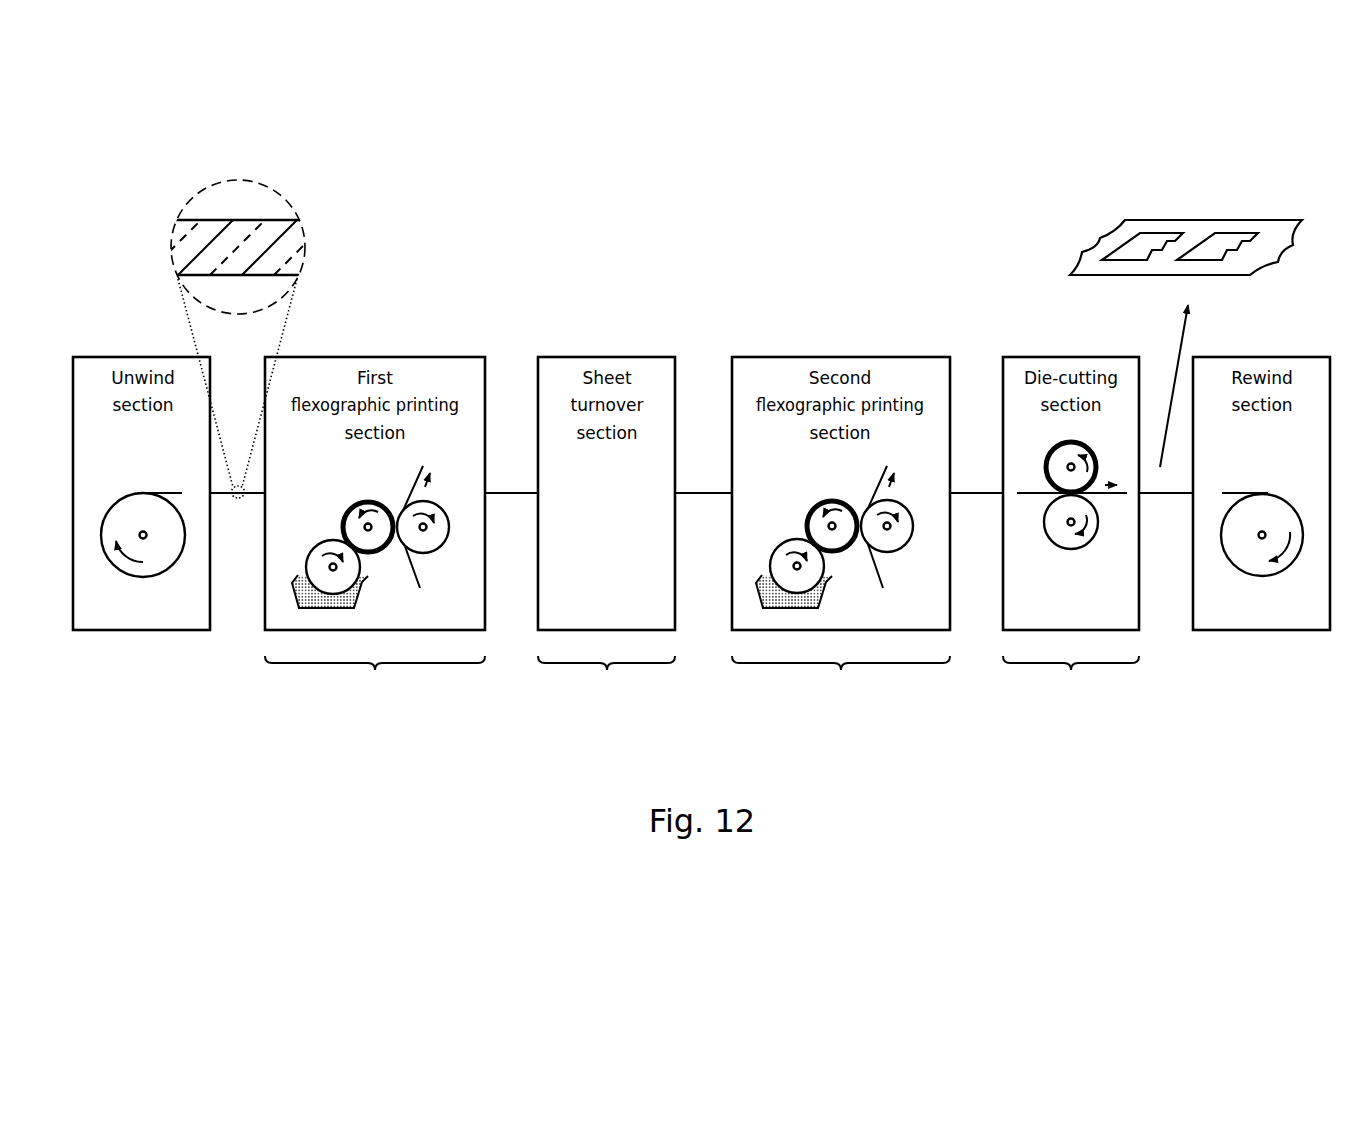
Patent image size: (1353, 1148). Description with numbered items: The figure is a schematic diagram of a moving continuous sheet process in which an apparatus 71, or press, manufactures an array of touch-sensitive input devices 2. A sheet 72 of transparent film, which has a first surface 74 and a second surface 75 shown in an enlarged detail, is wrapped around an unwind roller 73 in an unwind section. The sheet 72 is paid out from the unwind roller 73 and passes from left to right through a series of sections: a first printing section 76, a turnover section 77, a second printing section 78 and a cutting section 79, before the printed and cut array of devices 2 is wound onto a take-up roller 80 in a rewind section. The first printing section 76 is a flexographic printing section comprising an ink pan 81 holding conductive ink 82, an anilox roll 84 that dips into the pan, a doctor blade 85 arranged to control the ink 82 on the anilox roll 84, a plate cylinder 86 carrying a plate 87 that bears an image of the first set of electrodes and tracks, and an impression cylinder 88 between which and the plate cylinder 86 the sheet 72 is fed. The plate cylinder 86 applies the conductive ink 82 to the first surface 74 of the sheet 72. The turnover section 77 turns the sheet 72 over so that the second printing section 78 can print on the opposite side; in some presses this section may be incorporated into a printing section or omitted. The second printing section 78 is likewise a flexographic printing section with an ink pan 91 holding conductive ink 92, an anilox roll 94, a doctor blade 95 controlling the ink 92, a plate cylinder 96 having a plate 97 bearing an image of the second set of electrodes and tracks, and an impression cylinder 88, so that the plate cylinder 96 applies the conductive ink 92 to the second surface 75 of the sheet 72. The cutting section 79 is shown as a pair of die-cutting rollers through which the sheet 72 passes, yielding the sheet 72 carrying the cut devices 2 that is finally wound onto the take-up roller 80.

The touch-sensitive input device 2 is at (1150, 240).
The apparatus 71 is at (1270, 776).
The sheet of transparent film 72 is at (300, 246).
The unwind roller 73 is at (162, 562).
The first surface 74 is at (275, 216).
The second surface 75 is at (287, 280).
The first printing section 76 is at (375, 678).
The turnover section 77 is at (606, 678).
The second printing section 78 is at (841, 678).
The cutting section 79 is at (1071, 678).
The take-up roller 80 is at (1246, 564).
The ink pan 81 is at (365, 588).
The conductive ink 82 is at (350, 603).
The anilox roll 84 is at (310, 558).
The doctor blade 85 is at (298, 574).
The plate cylinder 86 is at (344, 523).
The plate 87 is at (355, 514).
The impression cylinder 88 is at (436, 548).
The ink pan 91 is at (828, 588).
The conductive ink 92 is at (813, 603).
The anilox roll 94 is at (775, 558).
The doctor blade 95 is at (762, 574).
The plate cylinder 96 is at (808, 523).
The plate 97 is at (817, 505).